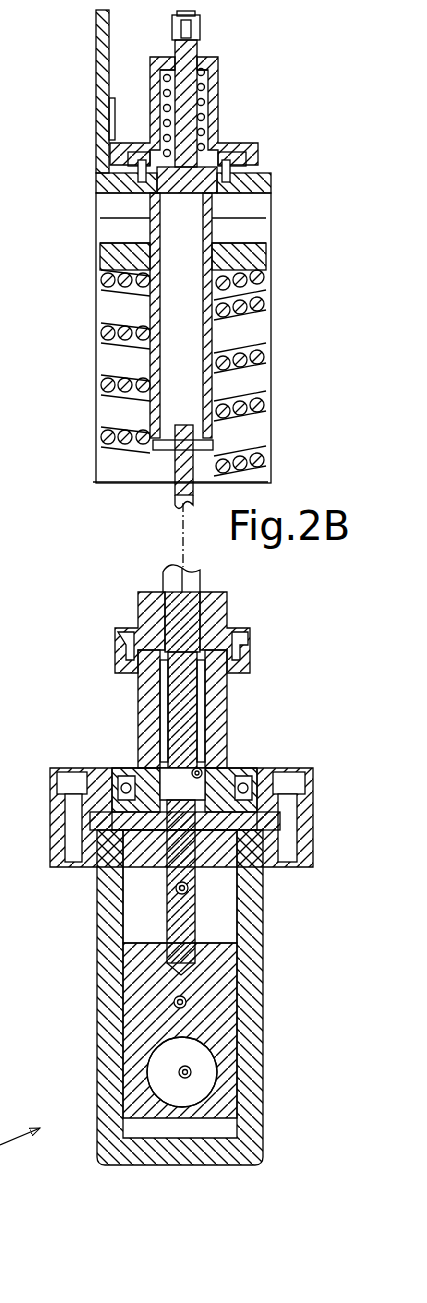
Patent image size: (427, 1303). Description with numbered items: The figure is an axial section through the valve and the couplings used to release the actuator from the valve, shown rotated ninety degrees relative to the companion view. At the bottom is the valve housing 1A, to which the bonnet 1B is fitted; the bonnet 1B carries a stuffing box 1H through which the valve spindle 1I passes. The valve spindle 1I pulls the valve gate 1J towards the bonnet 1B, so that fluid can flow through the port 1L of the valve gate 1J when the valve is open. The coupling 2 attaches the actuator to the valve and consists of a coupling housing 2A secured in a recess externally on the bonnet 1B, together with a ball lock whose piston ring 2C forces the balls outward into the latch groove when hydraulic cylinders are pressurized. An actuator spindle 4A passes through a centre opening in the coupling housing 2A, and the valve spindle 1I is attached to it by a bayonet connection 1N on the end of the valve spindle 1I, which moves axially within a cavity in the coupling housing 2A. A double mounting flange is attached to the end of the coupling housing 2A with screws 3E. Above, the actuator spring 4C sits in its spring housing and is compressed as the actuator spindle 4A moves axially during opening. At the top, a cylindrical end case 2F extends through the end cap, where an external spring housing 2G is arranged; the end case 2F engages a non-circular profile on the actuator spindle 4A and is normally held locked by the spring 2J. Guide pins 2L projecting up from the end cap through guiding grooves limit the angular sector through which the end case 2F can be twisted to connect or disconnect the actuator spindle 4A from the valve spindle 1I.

The coupling 2 is at (98, 710).
The coupling housing 2A is at (227, 710).
The piston ring 2C is at (245, 764).
The end case 2F is at (220, 327).
The spring housing 2G is at (223, 80).
The spring 2J is at (155, 82).
The guide pins 2L is at (247, 157).
The screws 3E is at (115, 628).
The actuator spindle 4A is at (170, 493).
The actuator spring 4C is at (248, 315).
The valve housing 1A is at (267, 915).
The bonnet 1B is at (315, 817).
The stuffing box 1H is at (160, 850).
The valve spindle 1I is at (176, 892).
The valve gate 1J is at (186, 1000).
The port 1L is at (191, 1073).
The bayonet connection 1N is at (203, 769).